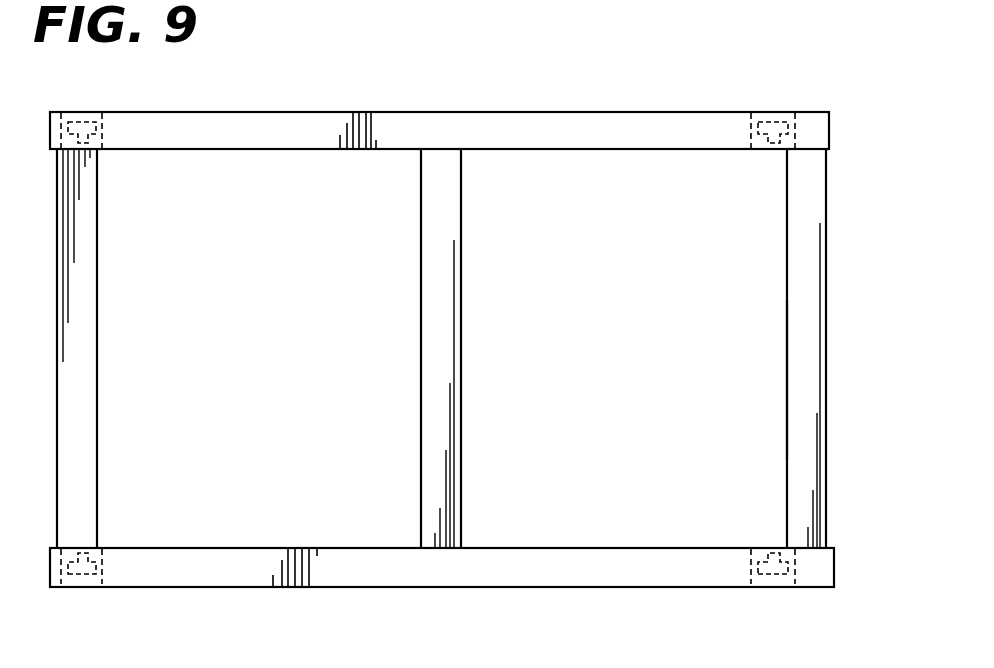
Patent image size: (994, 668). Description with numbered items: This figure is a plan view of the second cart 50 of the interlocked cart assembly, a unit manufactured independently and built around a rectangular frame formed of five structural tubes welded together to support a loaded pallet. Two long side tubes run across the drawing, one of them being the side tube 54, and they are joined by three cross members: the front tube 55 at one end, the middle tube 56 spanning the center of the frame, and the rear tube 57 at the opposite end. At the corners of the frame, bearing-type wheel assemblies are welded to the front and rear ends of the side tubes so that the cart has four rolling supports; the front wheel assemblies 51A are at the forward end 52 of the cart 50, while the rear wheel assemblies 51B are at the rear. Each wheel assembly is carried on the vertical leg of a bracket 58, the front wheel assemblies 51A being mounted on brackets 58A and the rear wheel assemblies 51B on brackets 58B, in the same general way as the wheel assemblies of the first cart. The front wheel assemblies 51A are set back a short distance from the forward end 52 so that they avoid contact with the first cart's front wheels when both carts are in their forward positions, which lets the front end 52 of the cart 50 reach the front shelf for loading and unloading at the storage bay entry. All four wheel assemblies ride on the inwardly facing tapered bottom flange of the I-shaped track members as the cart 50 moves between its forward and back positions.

The second cart 50 is at (587, 590).
The front wheel assemblies 51A is at (774, 122).
The rear wheel assemblies 51B is at (82, 122).
The forward end 52 is at (826, 260).
The side tube 54 is at (643, 133).
The front tube 55 is at (802, 380).
The middle tube 56 is at (440, 431).
The rear tube 57 is at (83, 450).
The bracket 58 is at (643, 553).
The front bracket 58A is at (750, 135).
The rear bracket 58B is at (100, 149).